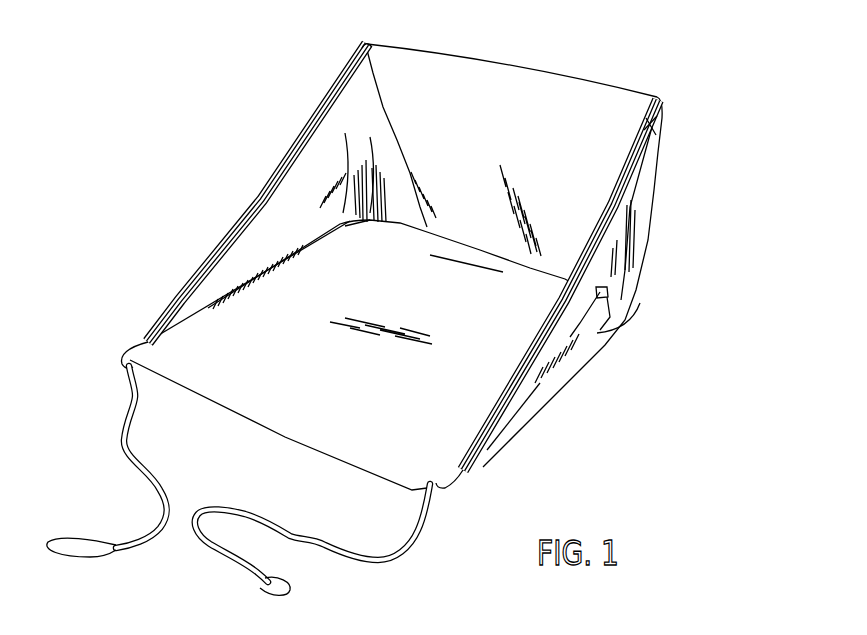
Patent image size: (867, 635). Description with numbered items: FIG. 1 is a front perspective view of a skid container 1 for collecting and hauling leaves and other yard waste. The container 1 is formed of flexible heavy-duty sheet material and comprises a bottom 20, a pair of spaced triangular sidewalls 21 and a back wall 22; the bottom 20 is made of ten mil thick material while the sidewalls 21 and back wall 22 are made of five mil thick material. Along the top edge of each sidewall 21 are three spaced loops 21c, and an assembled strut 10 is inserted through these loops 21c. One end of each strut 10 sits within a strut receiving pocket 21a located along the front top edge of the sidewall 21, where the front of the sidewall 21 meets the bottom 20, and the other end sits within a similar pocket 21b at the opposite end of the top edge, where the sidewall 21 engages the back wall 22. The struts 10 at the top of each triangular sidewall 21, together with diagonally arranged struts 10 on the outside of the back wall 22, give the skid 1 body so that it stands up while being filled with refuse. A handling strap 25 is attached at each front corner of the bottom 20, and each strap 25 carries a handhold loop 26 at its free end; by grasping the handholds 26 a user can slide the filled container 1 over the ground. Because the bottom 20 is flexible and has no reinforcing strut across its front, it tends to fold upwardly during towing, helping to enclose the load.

The skid container 1 is at (690, 218).
The assembled strut 10 is at (247, 237).
The bottom 20 is at (360, 386).
The sidewall 21 is at (319, 190).
The strut receiving pocket 21a is at (145, 345).
The pocket 21b is at (363, 47).
The loops 21c is at (317, 110).
The back wall 22 is at (498, 146).
The handling strap 25 is at (123, 410).
The handhold loop 26 is at (62, 537).